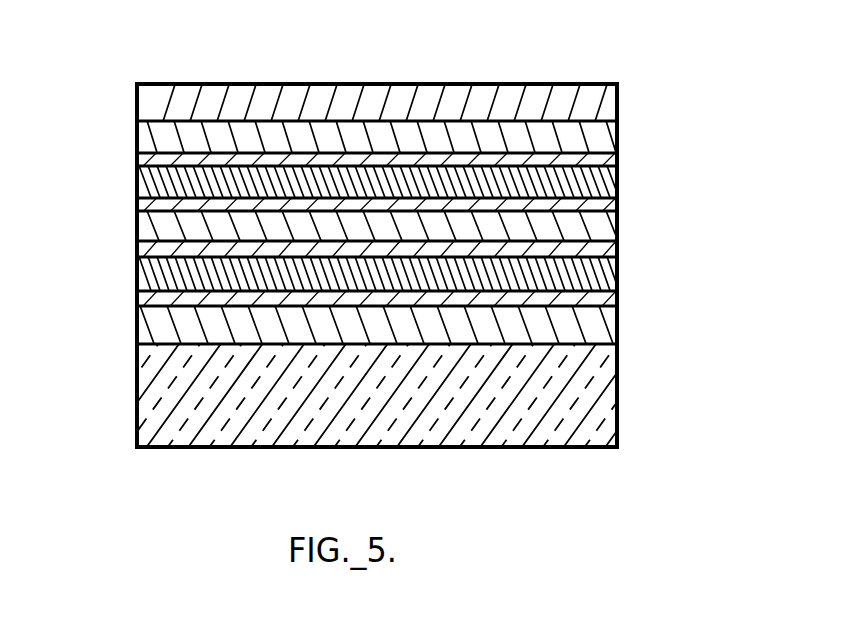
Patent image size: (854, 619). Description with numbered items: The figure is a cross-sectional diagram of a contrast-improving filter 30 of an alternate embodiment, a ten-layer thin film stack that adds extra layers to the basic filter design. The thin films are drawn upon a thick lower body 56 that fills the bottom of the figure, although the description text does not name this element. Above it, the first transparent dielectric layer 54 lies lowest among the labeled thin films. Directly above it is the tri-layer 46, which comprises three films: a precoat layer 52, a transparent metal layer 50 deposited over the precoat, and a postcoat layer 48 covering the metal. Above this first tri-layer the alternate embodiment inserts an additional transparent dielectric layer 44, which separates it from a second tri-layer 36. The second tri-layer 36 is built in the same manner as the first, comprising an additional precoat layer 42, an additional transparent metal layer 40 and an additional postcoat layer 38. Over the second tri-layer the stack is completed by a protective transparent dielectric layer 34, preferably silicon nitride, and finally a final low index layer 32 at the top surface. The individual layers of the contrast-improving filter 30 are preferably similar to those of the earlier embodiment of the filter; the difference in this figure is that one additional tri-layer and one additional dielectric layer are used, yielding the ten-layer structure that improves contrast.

The contrast-improving filter 30 is at (601, 45).
The final low index layer 32 is at (147, 102).
The protective transparent dielectric layer 34 is at (147, 137).
The second tri-layer 36 is at (128, 155).
The additional postcoat layer 38 is at (618, 162).
The additional transparent metal layer 40 is at (590, 183).
The additional precoat layer 42 is at (618, 208).
The additional transparent dielectric layer 44 is at (147, 228).
The tri-layer 46 is at (130, 242).
The postcoat layer 48 is at (618, 250).
The transparent metal layer 50 is at (598, 280).
The precoat layer 52 is at (600, 300).
The first transparent dielectric layer 54 is at (148, 323).
The substrate 56 is at (147, 386).